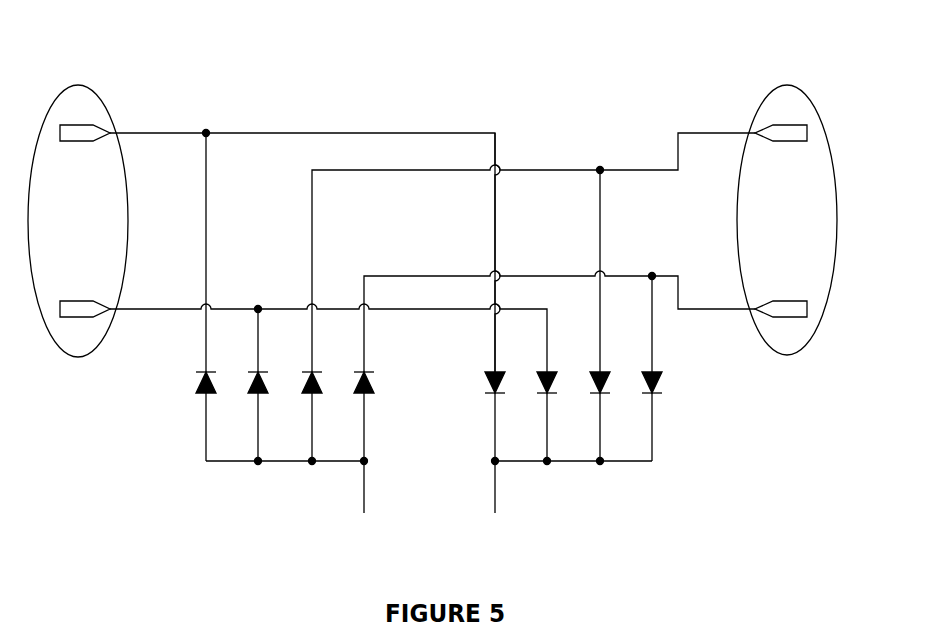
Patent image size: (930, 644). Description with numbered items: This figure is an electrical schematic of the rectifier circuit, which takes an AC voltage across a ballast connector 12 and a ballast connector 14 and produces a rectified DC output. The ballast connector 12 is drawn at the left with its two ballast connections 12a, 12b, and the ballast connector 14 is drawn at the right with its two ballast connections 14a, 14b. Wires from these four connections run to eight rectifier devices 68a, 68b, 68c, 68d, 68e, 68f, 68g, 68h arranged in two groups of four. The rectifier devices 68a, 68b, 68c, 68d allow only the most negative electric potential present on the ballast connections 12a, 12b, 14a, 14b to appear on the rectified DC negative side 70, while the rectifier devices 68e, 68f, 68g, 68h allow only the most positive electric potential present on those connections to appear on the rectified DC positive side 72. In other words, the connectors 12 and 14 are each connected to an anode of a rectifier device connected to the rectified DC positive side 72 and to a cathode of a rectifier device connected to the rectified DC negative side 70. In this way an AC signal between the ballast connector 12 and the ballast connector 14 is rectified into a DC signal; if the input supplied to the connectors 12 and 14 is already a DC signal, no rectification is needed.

The ballast connector 12 is at (86, 84).
The ballast connection 12a is at (86, 133).
The ballast connection 12b is at (83, 308).
The ballast connector 14 is at (771, 87).
The ballast connection 14a is at (795, 128).
The ballast connection 14b is at (795, 307).
The rectifier device 68a is at (191, 398).
The rectifier device 68b is at (243, 398).
The rectifier device 68c is at (297, 398).
The rectifier device 68d is at (349, 398).
The rectifier device 68e is at (480, 398).
The rectifier device 68f is at (532, 398).
The rectifier device 68g is at (585, 398).
The rectifier device 68h is at (637, 398).
The rectified DC negative side 70 is at (343, 512).
The rectified DC positive side 72 is at (514, 514).